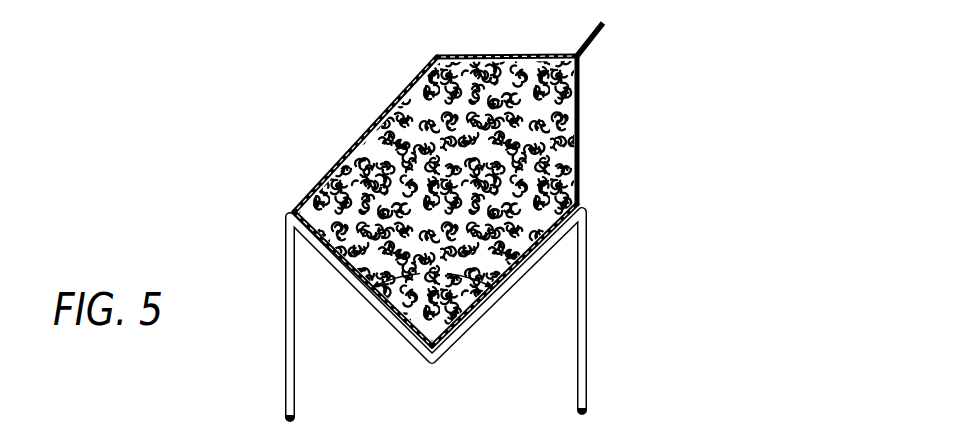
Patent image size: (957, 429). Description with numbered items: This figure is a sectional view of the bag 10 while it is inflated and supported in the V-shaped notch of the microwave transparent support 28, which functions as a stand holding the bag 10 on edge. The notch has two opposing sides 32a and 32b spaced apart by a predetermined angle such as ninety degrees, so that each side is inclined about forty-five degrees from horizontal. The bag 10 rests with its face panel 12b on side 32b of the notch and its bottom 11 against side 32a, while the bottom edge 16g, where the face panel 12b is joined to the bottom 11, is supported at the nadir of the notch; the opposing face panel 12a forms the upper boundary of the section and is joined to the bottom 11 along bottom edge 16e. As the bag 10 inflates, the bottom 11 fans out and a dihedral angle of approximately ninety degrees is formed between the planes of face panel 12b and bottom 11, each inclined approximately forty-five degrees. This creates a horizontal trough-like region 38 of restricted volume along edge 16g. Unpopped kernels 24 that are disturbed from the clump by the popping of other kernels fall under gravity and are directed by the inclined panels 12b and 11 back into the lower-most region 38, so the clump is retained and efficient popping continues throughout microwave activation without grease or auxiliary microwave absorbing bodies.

The bag 10 is at (370, 112).
The bottom 11 is at (347, 278).
The face panel 12a is at (331, 173).
The face panel 12b is at (578, 204).
The bottom edge 16e is at (287, 212).
The bottom edge 16g is at (434, 362).
The unpopped kernels 24 is at (463, 332).
The support 28 is at (597, 302).
The side of notch 32a is at (388, 315).
The side of notch 32b is at (527, 262).
The trough-like region 38 is at (420, 337).